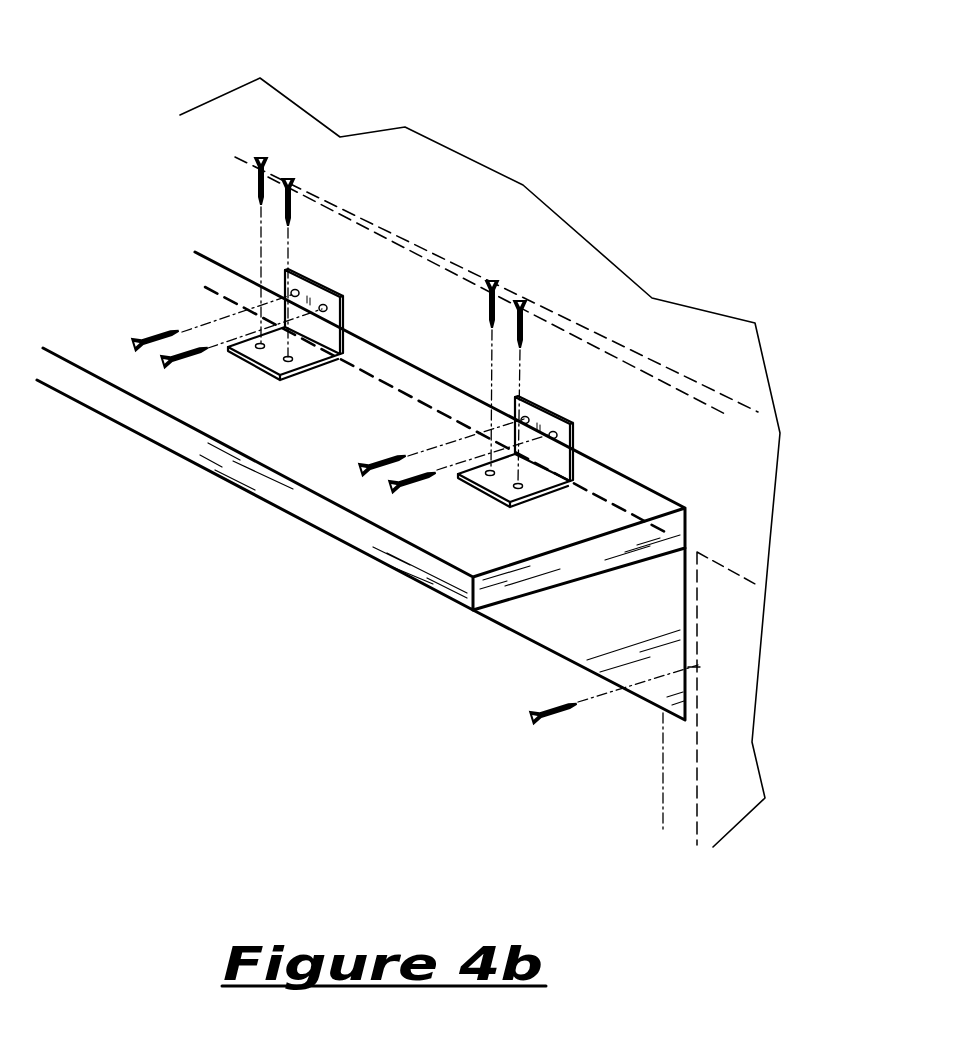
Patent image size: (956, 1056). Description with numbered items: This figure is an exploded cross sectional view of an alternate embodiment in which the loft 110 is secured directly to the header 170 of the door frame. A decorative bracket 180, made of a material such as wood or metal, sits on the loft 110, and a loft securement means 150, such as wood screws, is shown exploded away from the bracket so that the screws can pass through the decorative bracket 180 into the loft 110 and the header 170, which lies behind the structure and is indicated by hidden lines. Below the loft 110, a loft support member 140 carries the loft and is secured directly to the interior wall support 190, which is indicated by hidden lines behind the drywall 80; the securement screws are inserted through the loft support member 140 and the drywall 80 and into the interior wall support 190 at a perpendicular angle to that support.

The drywall 80 is at (713, 332).
The loft 110 is at (192, 440).
The loft support member 140 is at (545, 625).
The loft securement means 150 is at (293, 178).
The header 170 is at (450, 255).
The decorative bracket 180 is at (553, 403).
The interior wall support 190 is at (675, 772).